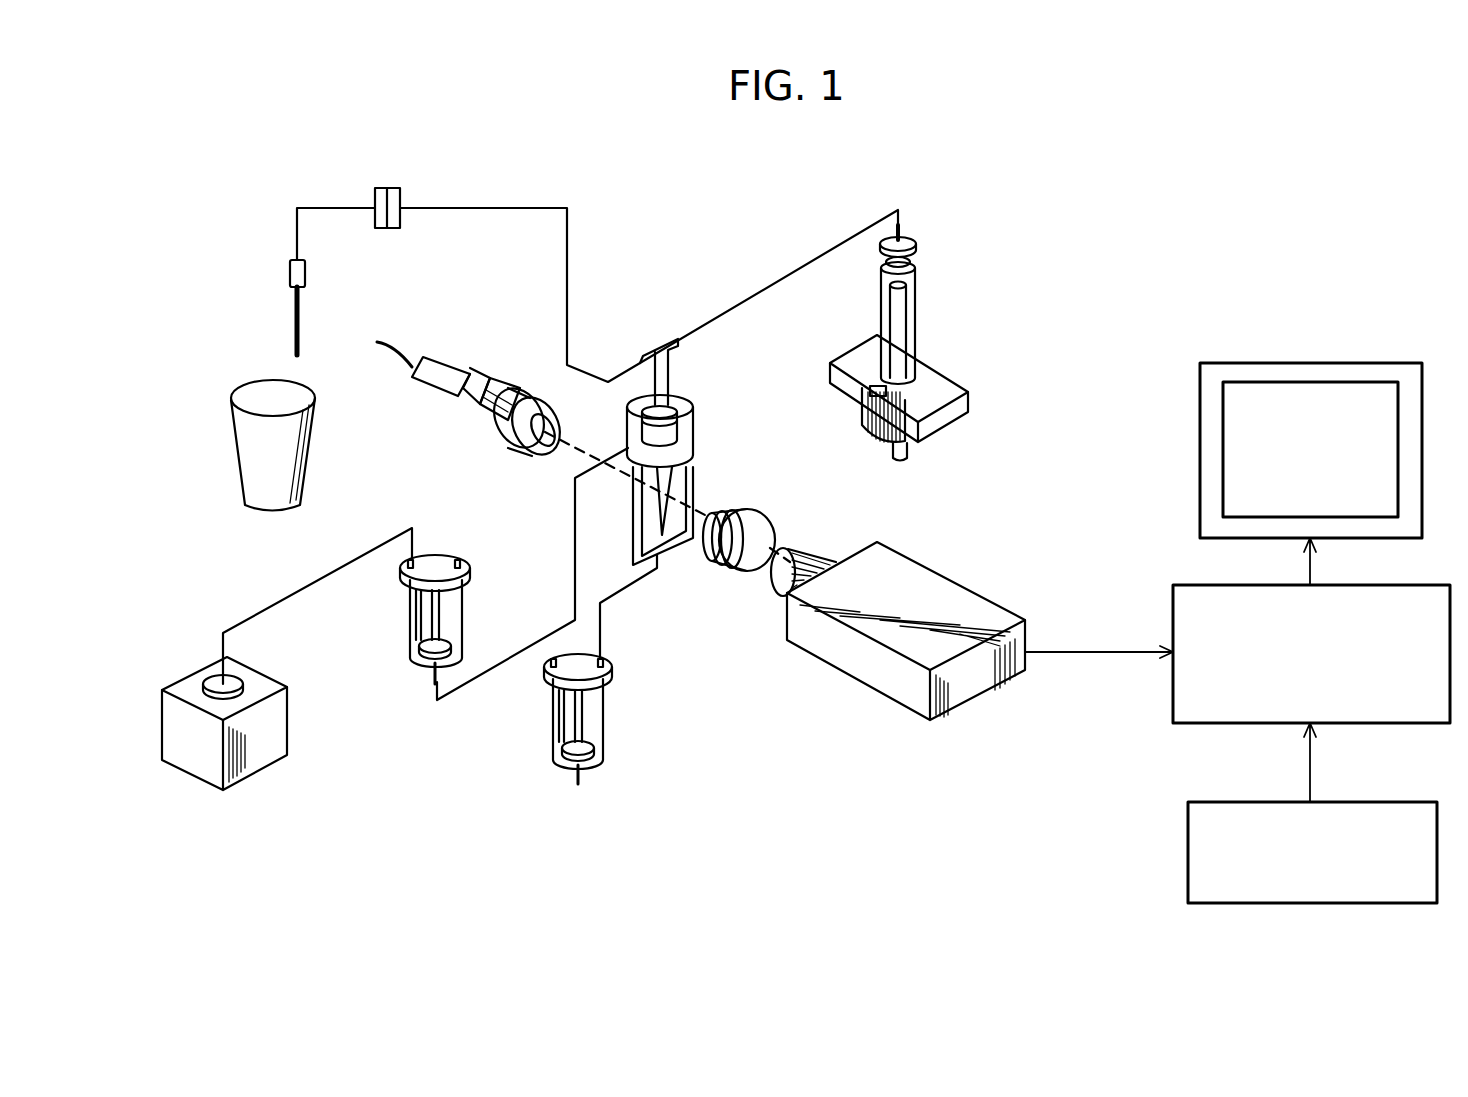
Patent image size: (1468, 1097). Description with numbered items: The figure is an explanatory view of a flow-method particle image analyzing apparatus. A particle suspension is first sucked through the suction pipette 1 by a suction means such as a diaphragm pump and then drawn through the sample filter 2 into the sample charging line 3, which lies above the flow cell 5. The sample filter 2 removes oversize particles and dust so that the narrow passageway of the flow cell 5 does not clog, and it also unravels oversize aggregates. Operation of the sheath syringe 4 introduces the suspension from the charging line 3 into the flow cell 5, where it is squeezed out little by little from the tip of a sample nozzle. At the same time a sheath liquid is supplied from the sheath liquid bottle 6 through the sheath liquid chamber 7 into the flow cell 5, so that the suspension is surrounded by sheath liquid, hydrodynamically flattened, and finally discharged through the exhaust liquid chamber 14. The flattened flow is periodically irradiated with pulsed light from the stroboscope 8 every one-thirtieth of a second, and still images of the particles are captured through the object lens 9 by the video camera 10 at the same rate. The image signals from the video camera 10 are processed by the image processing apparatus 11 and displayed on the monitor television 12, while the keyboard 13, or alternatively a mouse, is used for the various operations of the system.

The suction pipette 1 is at (290, 305).
The sample filter 2 is at (393, 188).
The sample charging line 3 is at (762, 293).
The sheath syringe 4 is at (917, 296).
The flow cell 5 is at (721, 453).
The sheath liquid bottle 6 is at (272, 733).
The sheath liquid chamber 7 is at (455, 610).
The stroboscope 8 is at (462, 406).
The object lens 9 is at (760, 530).
The video camera 10 is at (945, 583).
The image processing apparatus 11 is at (1182, 583).
The monitor television 12 is at (1226, 363).
The keyboard 13 is at (1188, 860).
The exhaust liquid chamber 14 is at (597, 718).